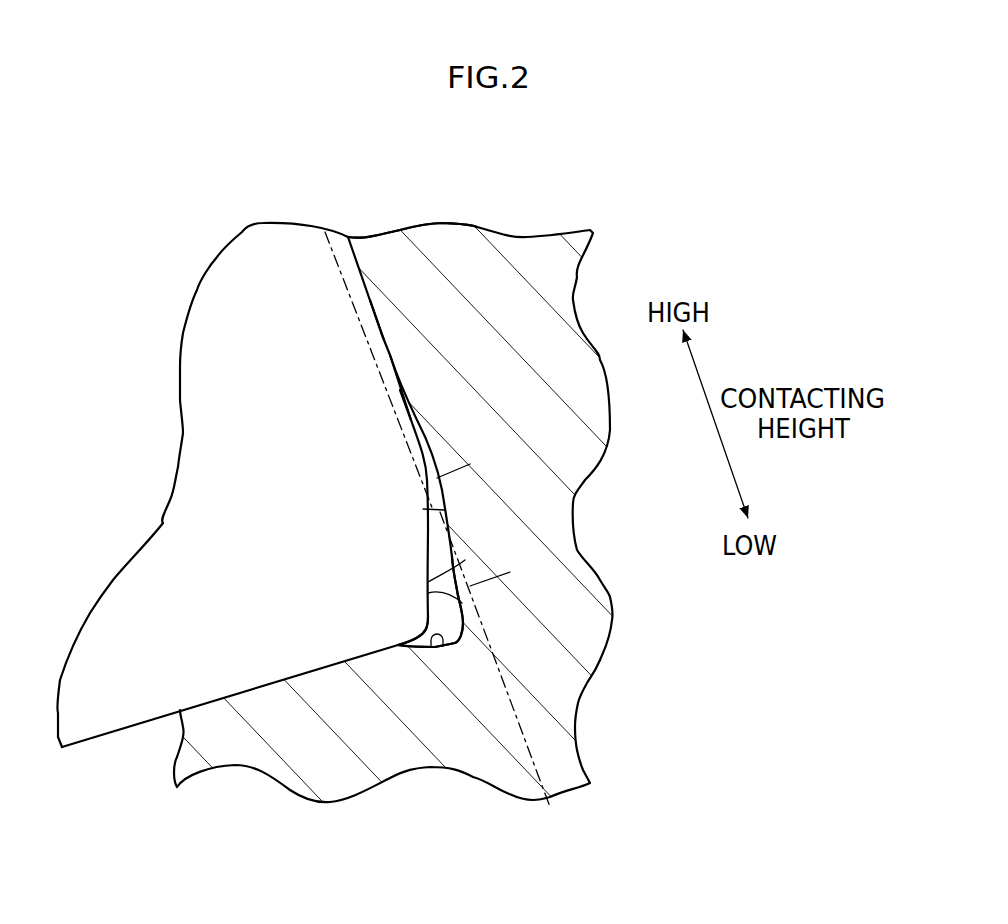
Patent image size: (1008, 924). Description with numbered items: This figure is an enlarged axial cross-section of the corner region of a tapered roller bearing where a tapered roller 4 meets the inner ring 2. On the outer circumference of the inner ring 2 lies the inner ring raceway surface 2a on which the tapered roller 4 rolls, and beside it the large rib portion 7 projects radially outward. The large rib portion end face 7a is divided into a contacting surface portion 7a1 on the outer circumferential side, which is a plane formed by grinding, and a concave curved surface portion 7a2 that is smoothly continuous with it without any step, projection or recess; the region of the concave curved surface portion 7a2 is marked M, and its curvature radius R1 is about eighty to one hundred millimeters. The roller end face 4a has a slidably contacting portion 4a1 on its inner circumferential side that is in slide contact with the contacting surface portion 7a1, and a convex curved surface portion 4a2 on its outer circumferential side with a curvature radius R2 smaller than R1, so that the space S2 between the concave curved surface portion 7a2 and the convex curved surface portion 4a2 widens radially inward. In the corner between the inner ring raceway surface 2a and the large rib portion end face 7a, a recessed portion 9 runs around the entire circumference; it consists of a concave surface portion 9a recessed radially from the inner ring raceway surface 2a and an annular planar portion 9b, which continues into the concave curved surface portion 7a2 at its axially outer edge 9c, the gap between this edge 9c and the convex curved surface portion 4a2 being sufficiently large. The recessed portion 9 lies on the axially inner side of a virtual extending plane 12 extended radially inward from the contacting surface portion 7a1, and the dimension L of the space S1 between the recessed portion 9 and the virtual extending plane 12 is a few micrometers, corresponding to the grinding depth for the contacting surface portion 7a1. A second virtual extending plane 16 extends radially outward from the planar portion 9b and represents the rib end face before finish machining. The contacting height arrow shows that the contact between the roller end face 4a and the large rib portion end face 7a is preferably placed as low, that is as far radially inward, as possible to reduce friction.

The inner ring 2 is at (527, 235).
The inner ring raceway surface 2a is at (253, 687).
The tapered roller 4 is at (193, 297).
The roller end face 4a is at (398, 372).
The slidably contacting portion 4a1 is at (384, 318).
The convex curved surface portion 4a2 is at (452, 609).
The large rib portion 7 is at (453, 236).
The large rib portion end face 7a is at (384, 347).
The contacting surface portion 7a1 is at (413, 422).
The concave curved surface portion 7a2 is at (427, 508).
The recessed portion 9 is at (418, 624).
The concave surface portion 9a is at (440, 648).
The annular planar portion 9b is at (428, 628).
The edge 9c is at (428, 593).
The virtual extending plane 12 is at (528, 750).
The virtual extending plane 16 is at (343, 286).
The curvature radius R1 is at (451, 551).
The curvature radius R2 is at (428, 539).
The space S1 is at (463, 607).
The space S2 is at (428, 581).
The dimension L is at (480, 617).
The region M is at (463, 468).